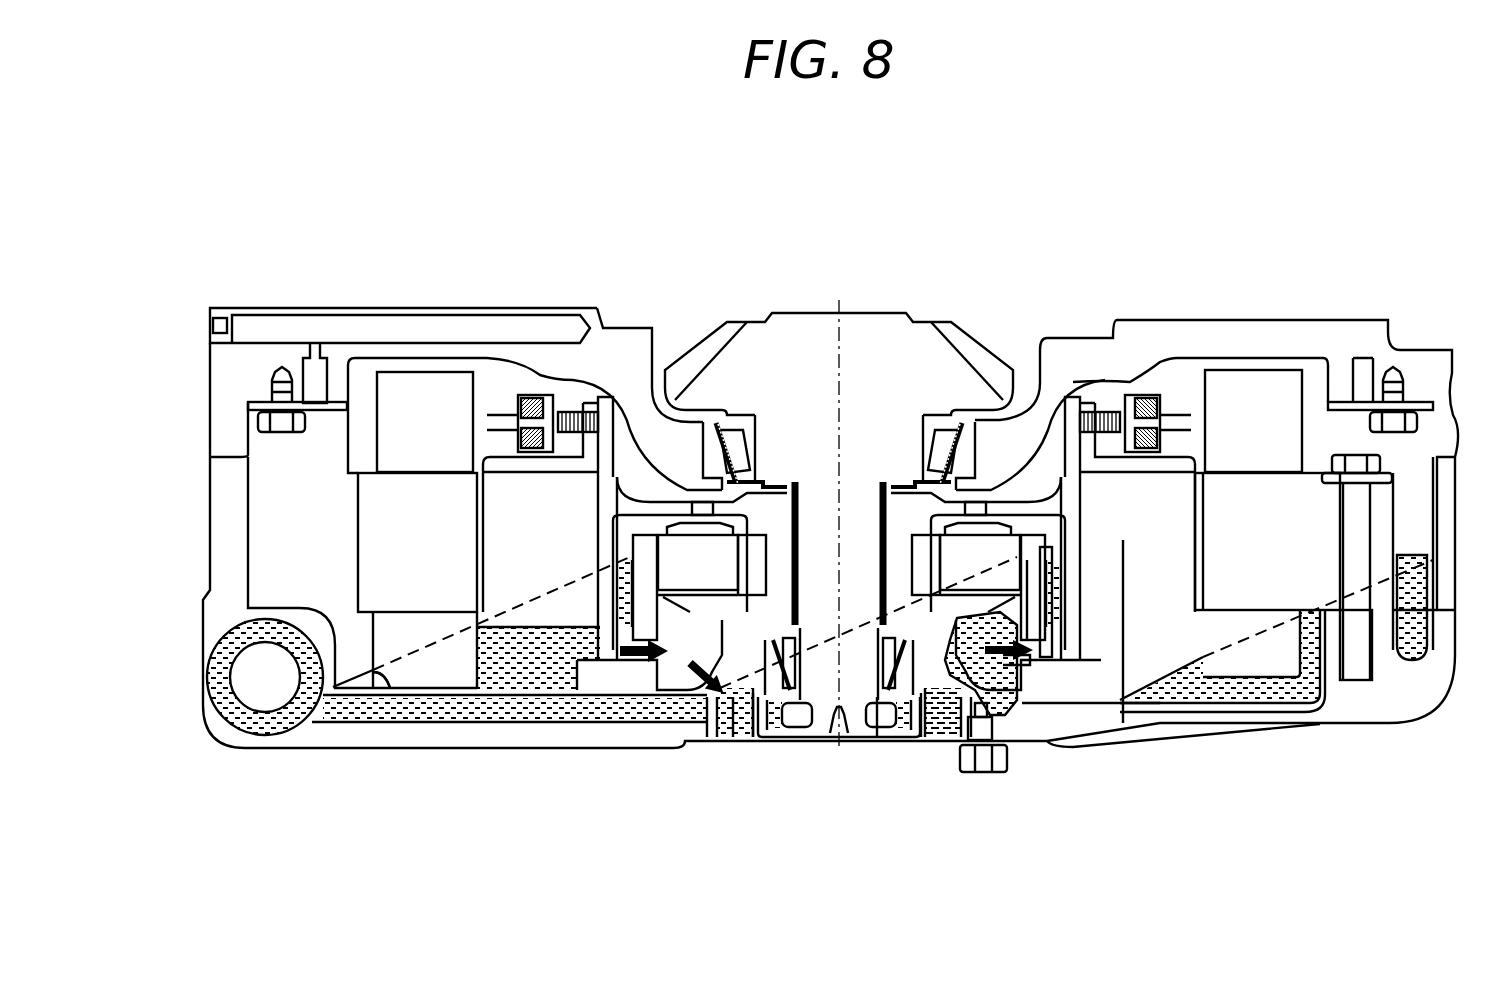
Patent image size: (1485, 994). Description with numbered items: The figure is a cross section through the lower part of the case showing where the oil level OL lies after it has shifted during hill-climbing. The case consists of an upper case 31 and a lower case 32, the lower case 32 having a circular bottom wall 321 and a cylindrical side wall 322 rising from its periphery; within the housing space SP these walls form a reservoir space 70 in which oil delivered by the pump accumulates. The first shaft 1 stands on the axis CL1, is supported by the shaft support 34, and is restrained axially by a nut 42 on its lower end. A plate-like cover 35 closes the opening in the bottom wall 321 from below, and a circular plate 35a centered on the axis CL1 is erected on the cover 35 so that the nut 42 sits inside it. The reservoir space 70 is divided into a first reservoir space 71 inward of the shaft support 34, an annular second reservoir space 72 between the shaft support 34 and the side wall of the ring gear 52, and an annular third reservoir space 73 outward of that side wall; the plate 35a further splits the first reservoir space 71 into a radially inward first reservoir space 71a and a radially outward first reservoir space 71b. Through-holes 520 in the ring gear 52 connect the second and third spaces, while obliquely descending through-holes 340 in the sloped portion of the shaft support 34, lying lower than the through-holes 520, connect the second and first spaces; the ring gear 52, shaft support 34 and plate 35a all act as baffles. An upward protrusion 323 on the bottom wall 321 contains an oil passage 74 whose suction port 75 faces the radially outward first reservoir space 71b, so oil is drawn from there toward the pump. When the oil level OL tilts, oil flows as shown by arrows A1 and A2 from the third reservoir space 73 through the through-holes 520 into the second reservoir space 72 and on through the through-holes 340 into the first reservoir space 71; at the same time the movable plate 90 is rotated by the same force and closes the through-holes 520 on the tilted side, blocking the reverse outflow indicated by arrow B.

The first shaft 1 is at (764, 336).
The upper case 31 is at (207, 375).
The lower case 32 is at (200, 596).
The bottom wall 321 is at (395, 750).
The side wall 322 is at (207, 558).
The protrusion 323 is at (415, 690).
The shaft support 34 is at (728, 642).
The cover 35 is at (830, 752).
The plate 35a is at (928, 730).
The through-holes 340 is at (1007, 658).
The nut 42 is at (790, 735).
The ring gear 52 is at (620, 630).
The reservoir space 70 is at (1183, 688).
The first reservoir space 71 is at (750, 728).
The radially inward first reservoir space 71a is at (885, 733).
The radially outward first reservoir space 71b is at (947, 733).
The second reservoir space 72 is at (1025, 678).
The third reservoir space 73 is at (515, 672).
The oil passage 74 is at (448, 713).
The suction port 75 is at (714, 718).
The movable plate 90 is at (1057, 587).
The through-holes 520 is at (1012, 660).
The housing space SP is at (295, 522).
The oil level OL is at (1183, 685).
The axis CL1 is at (839, 512).
The arrow A1 is at (660, 642).
The arrow A2 is at (721, 672).
The arrow B is at (1009, 640).